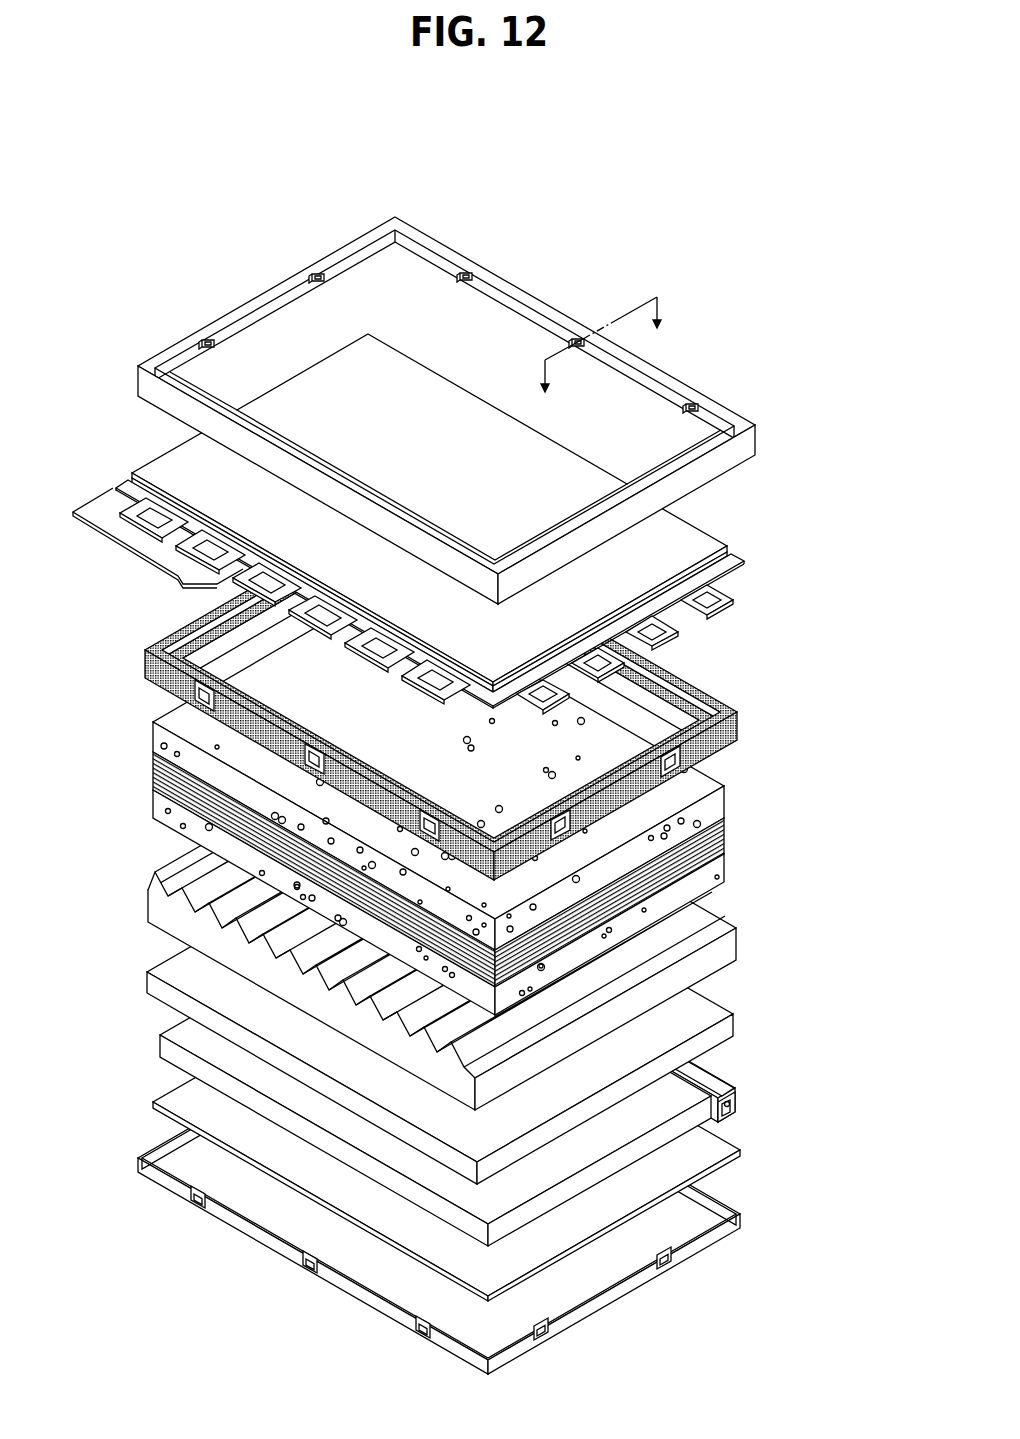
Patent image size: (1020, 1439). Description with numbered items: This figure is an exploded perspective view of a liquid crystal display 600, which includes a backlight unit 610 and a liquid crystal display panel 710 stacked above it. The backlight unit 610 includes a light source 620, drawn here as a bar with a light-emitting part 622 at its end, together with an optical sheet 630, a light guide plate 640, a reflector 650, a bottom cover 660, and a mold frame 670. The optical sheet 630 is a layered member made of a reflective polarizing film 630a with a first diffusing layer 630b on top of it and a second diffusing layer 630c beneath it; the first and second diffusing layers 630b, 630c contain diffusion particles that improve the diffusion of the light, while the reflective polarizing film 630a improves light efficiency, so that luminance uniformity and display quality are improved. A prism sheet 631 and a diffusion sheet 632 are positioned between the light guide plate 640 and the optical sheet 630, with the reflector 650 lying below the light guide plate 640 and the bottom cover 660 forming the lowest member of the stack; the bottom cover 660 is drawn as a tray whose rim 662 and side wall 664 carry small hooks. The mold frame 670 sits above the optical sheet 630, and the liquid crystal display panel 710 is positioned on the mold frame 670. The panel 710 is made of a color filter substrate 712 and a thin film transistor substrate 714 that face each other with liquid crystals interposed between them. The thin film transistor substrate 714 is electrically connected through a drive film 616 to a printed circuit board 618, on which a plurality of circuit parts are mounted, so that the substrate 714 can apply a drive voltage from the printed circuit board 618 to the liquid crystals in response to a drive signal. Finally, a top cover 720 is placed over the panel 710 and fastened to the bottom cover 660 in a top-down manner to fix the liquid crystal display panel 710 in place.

The liquid crystal display 600 is at (635, 181).
The backlight unit 610 is at (845, 1234).
The drive film 616 is at (118, 492).
The printed circuit board 618 is at (112, 528).
The light source 620 is at (742, 1106).
The light source 622 is at (717, 1078).
The optical sheet 630 is at (795, 805).
The reflective polarizing film 630a is at (735, 822).
The first diffusing layer 630b is at (735, 790).
The second diffusing layer 630c is at (735, 856).
The prism sheet 631 is at (150, 910).
The diffusion sheet 632 is at (147, 982).
The light guide plate 640 is at (160, 1047).
The reflector 650 is at (153, 1108).
The bottom cover 660 is at (706, 1285).
The bottom plate 662 is at (616, 1262).
The side wall 664 is at (622, 1290).
The mold frame 670 is at (739, 724).
The liquid crystal display panel 710 is at (826, 493).
The color filter substrate 712 is at (682, 528).
The thin film transistor substrate 714 is at (736, 555).
The top cover 720 is at (742, 413).